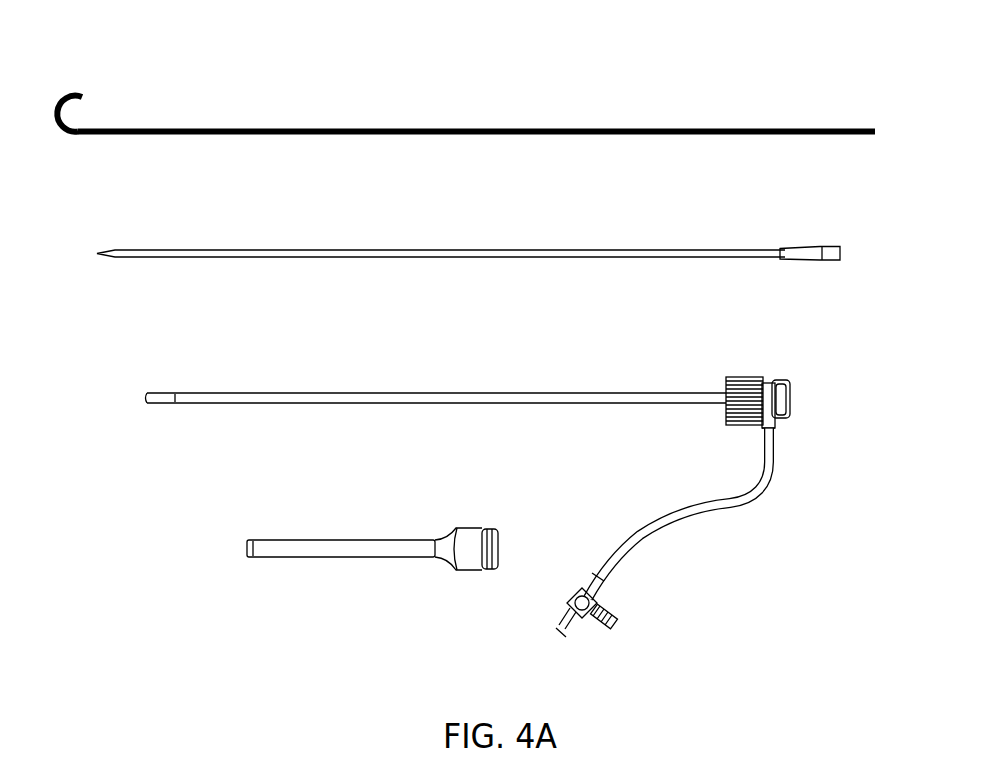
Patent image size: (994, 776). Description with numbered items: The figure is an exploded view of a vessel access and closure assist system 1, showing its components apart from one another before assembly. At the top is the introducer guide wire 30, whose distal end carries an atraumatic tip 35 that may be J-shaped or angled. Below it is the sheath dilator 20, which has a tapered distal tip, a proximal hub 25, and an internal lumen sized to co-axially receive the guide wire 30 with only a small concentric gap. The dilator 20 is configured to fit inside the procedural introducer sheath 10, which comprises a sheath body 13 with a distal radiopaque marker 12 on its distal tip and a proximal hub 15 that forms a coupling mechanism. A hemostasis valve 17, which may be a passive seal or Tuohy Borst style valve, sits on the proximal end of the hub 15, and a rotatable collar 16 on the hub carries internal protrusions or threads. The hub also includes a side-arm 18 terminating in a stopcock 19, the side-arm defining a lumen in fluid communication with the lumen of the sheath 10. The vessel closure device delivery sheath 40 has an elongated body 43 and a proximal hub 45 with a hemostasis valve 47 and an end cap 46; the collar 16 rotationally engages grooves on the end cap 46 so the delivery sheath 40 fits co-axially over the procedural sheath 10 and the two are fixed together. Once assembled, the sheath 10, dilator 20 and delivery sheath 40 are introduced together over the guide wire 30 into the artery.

The vessel access and closure assist system 1 is at (676, 42).
The introducer guide wire 30 is at (461, 80).
The atraumatic tip 35 is at (76, 88).
The sheath dilator 20 is at (472, 225).
The proximal hub 25 is at (815, 247).
The procedural introducer sheath 10 is at (520, 476).
The distal radiopaque marker 12 is at (169, 392).
The sheath body 13 is at (531, 392).
The proximal hub 15 is at (725, 476).
The rotatable collar 16 is at (741, 375).
The hemostasis valve 17 is at (783, 381).
The side-arm 18 is at (752, 501).
The stopcock 19 is at (625, 617).
The vessel closure device delivery sheath 40 is at (409, 546).
The elongated body 43 is at (297, 557).
The proximal hub 45 is at (470, 562).
The end cap 46 is at (500, 555).
The hemostasis valve 47 is at (490, 528).